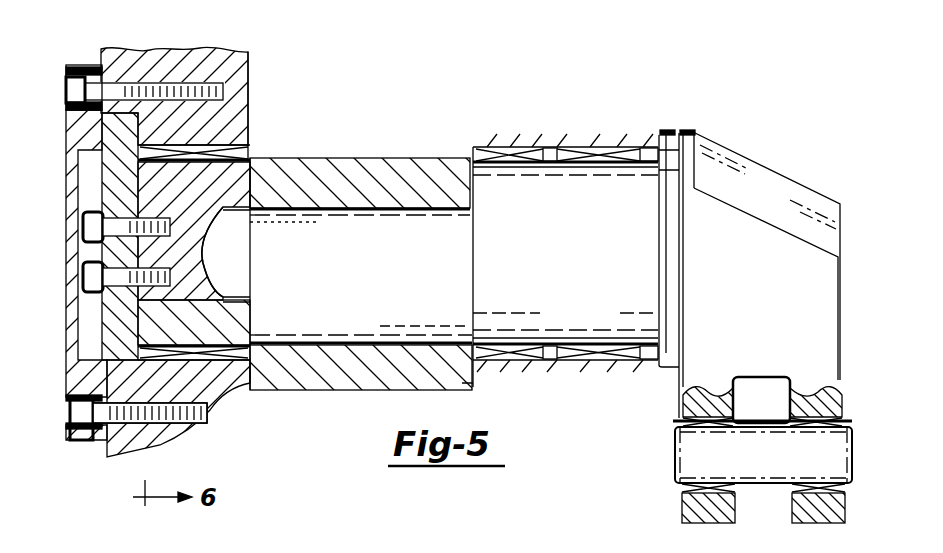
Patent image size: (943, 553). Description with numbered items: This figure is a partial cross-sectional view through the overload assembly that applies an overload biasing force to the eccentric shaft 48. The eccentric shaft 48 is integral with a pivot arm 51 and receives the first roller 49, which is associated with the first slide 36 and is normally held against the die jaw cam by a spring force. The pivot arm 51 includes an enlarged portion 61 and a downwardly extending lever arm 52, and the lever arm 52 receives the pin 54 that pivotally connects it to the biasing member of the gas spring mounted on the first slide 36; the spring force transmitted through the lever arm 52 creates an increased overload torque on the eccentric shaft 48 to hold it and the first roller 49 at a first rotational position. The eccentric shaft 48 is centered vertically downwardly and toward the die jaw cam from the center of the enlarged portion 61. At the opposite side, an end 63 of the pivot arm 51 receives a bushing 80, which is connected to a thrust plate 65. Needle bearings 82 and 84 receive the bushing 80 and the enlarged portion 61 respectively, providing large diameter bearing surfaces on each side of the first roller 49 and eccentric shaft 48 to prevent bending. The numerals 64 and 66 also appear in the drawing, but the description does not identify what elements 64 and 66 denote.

The first slide 36 is at (180, 68).
The eccentric shaft 48 is at (330, 317).
The first roller 49 is at (363, 373).
The pivot arm 51 is at (757, 197).
The lever arm 52 is at (690, 368).
The pin 54 is at (675, 453).
The enlarged portion 61 is at (550, 316).
The end 63 is at (240, 180).
The end plate 64 is at (82, 137).
The thrust plate 65 is at (110, 209).
The outer shell 66 is at (489, 147).
The bushing 80 is at (178, 335).
The needle bearing 82 is at (248, 381).
The needle bearing 84 is at (548, 147).